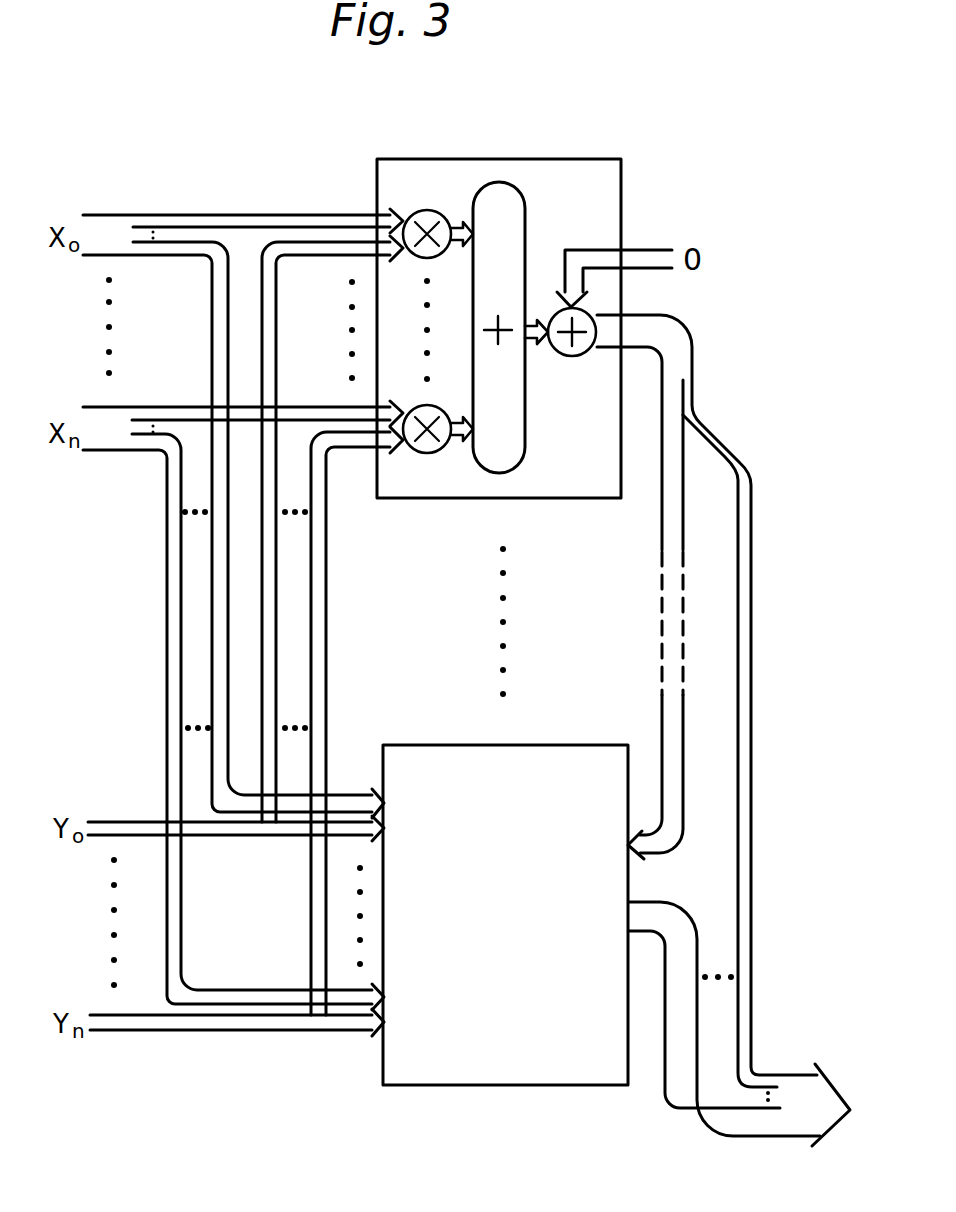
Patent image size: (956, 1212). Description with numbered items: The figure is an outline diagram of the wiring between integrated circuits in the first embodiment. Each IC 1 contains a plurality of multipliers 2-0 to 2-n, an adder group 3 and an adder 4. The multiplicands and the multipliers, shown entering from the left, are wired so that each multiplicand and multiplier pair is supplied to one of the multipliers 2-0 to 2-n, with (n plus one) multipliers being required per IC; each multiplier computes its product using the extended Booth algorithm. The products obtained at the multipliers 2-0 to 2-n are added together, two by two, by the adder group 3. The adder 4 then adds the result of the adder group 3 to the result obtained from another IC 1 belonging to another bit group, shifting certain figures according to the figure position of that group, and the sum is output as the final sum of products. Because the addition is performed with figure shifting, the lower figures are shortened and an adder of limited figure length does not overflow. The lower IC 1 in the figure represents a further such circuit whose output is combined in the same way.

The IC 1 is at (538, 159).
The multiplier 2-0 is at (410, 212).
The multiplier 2-n is at (426, 454).
The adder group 3 is at (518, 190).
The adder 4 is at (572, 357).